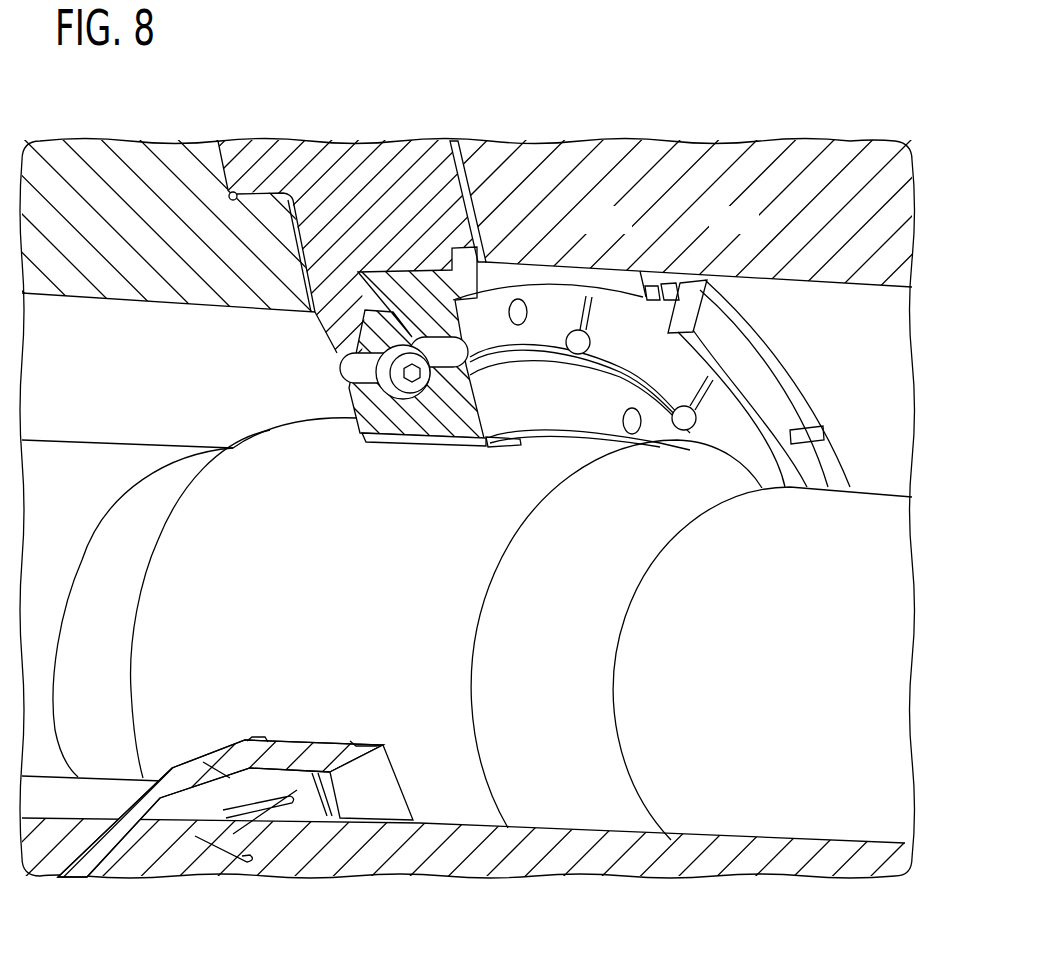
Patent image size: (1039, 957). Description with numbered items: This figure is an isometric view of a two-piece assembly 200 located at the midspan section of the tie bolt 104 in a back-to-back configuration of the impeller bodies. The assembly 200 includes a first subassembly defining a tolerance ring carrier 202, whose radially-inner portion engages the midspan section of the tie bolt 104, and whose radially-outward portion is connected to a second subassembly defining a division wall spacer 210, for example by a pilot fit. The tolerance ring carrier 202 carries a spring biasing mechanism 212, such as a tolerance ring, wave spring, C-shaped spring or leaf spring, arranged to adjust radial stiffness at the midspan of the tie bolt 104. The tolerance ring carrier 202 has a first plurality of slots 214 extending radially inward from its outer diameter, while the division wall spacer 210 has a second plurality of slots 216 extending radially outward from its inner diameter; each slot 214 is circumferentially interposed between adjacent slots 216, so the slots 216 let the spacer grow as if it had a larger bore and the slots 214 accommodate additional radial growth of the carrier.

The tie bolt 104 is at (790, 681).
The assembly 200 is at (537, 90).
The tolerance ring carrier 202 is at (520, 404).
The division wall spacer 210 is at (378, 188).
The spring biasing mechanism 212 is at (418, 444).
The first plurality of slots 214 is at (580, 327).
The second plurality of slots 216 is at (705, 292).